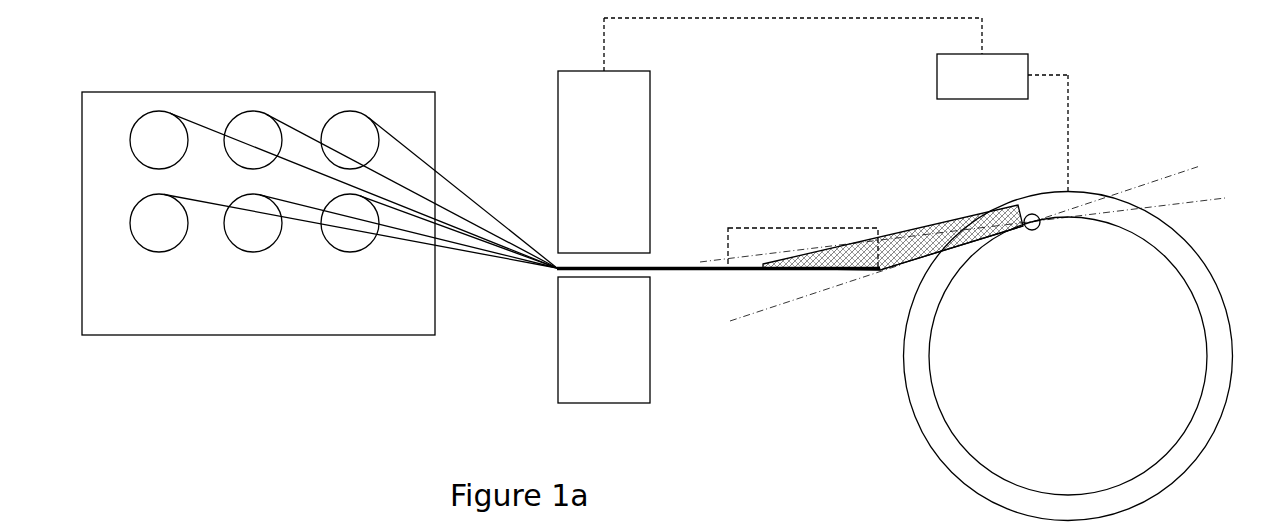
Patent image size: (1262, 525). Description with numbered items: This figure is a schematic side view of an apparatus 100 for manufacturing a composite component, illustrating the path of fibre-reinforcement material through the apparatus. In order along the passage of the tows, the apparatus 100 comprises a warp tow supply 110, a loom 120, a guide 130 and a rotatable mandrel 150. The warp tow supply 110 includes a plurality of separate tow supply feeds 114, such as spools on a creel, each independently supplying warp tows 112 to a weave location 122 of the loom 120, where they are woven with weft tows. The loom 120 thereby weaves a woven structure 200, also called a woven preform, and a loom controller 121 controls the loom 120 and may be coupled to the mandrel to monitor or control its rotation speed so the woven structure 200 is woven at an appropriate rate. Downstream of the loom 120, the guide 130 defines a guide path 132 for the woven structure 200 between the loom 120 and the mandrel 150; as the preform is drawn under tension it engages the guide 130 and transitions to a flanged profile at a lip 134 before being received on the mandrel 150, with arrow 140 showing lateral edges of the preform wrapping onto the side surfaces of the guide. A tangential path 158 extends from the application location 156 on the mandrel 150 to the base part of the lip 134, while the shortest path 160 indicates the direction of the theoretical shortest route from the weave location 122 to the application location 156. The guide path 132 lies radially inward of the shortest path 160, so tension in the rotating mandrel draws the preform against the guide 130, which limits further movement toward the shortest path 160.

The apparatus 100 is at (137, 29).
The warp tow supply 110 is at (273, 92).
The warp tows 112 is at (430, 143).
The tow supply feeds 114 is at (343, 128).
The loom 120 is at (635, 182).
The loom controller 121 is at (1002, 123).
The weave location 122 is at (587, 279).
The guide 130 is at (778, 228).
The guide path 132 is at (748, 285).
The lip 134 is at (876, 270).
The arrow 140 is at (852, 252).
The rotatable mandrel 150 is at (1087, 369).
The application location 156 is at (1032, 230).
The tangential path 158 is at (1168, 175).
The shortest path 160 is at (1200, 203).
The woven structure 200 is at (678, 264).